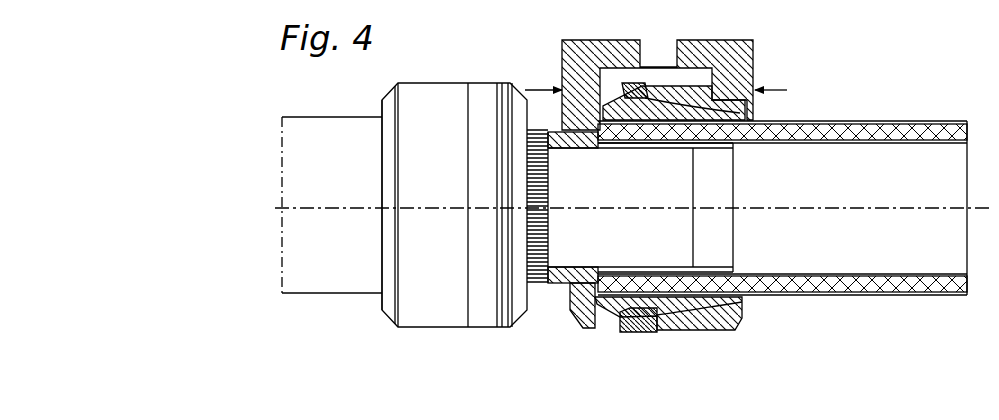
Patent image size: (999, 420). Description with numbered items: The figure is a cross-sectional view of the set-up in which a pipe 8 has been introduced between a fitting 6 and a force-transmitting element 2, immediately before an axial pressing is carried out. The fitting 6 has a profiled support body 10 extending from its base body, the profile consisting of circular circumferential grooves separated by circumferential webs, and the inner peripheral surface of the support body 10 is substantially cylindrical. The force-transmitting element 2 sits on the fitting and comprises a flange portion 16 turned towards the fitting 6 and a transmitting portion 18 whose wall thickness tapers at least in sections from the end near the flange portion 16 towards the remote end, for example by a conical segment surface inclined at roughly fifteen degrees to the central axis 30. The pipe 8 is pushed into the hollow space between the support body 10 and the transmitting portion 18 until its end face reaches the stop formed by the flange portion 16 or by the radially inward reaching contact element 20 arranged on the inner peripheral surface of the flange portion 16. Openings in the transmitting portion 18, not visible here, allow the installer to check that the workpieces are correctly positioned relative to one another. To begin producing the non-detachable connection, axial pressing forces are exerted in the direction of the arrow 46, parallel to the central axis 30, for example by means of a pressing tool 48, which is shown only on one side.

The force-transmitting element 2 is at (588, 336).
The fitting 6 is at (555, 302).
The pipe 8 is at (930, 95).
The support body 10 is at (718, 266).
The flange portion 16 is at (597, 312).
The transmitting portion 18 is at (657, 314).
The contact element 20 is at (593, 268).
The central axis 30 is at (818, 208).
The arrow 46 is at (778, 85).
The pressing tool 48 is at (562, 52).